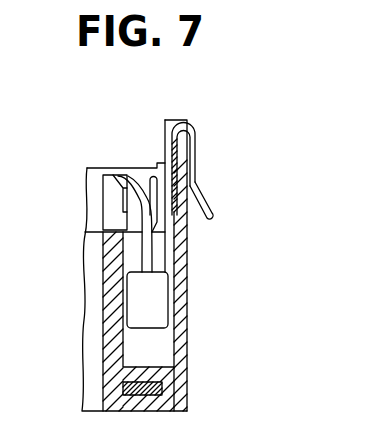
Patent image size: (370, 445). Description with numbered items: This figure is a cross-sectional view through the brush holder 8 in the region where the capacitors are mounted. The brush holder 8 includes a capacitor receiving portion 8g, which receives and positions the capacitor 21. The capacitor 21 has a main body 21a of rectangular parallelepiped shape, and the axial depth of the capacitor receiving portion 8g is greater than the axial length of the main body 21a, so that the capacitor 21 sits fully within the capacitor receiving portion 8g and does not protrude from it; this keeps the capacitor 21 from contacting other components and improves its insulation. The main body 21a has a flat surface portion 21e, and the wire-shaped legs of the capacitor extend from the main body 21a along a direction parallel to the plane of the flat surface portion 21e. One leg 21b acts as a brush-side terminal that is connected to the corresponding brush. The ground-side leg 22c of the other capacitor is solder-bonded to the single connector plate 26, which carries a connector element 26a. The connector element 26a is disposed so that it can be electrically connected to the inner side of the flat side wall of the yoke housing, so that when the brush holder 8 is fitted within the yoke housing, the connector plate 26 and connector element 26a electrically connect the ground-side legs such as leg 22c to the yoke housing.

The brush holder 8 is at (187, 268).
The capacitor receiving portion 8g is at (173, 250).
The capacitor 21 is at (155, 330).
The main body 21a is at (170, 312).
The leg 21b is at (110, 200).
The flat surface portion 21e is at (118, 291).
The leg 22c is at (150, 200).
The connector plate 26 is at (167, 162).
The connector element 26a is at (195, 160).